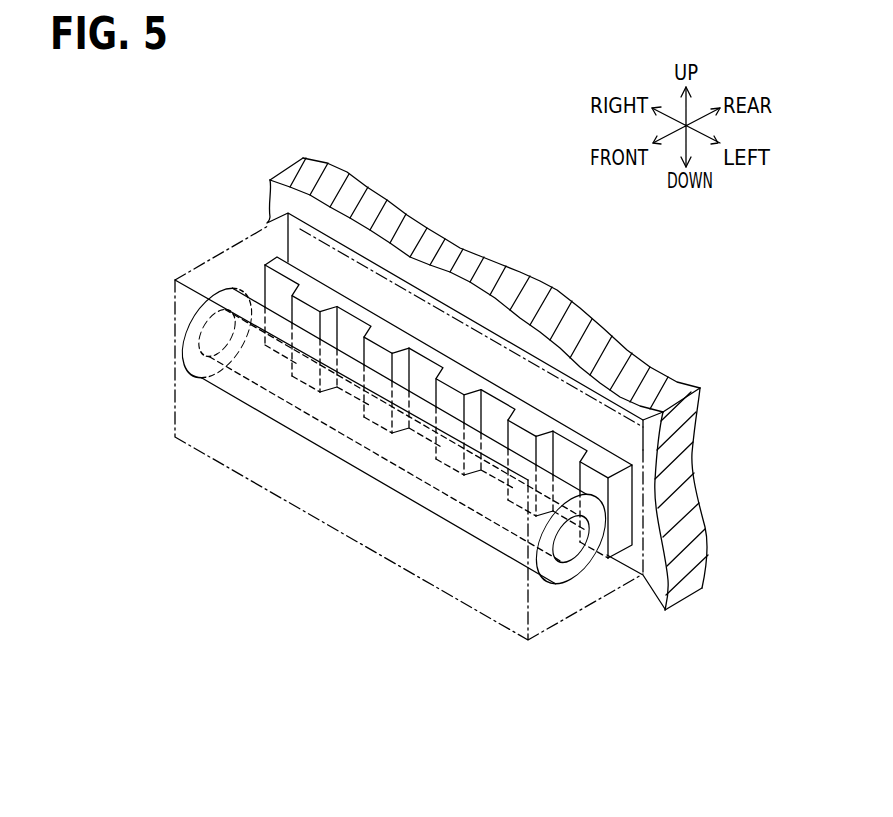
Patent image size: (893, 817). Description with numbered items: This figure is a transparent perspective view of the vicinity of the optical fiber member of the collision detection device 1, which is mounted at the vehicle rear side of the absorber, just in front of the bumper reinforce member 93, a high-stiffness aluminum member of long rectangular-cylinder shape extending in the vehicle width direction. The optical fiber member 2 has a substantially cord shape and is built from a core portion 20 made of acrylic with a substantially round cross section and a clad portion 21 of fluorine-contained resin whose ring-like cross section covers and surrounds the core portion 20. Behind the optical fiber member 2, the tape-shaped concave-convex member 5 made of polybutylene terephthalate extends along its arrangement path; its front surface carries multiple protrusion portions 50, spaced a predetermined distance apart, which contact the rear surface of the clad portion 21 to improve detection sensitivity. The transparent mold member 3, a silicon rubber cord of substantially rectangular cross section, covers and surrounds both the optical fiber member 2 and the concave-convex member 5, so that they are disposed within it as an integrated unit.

The collision detection device 1 is at (210, 154).
The optical fiber member 2 is at (407, 502).
The mold member 3 is at (320, 493).
The concave-convex member 5 is at (634, 578).
The core portion 20 is at (626, 539).
The clad portion 21 is at (577, 553).
The protrusion portions 50 is at (515, 440).
The bumper reinforce member 93 is at (532, 307).